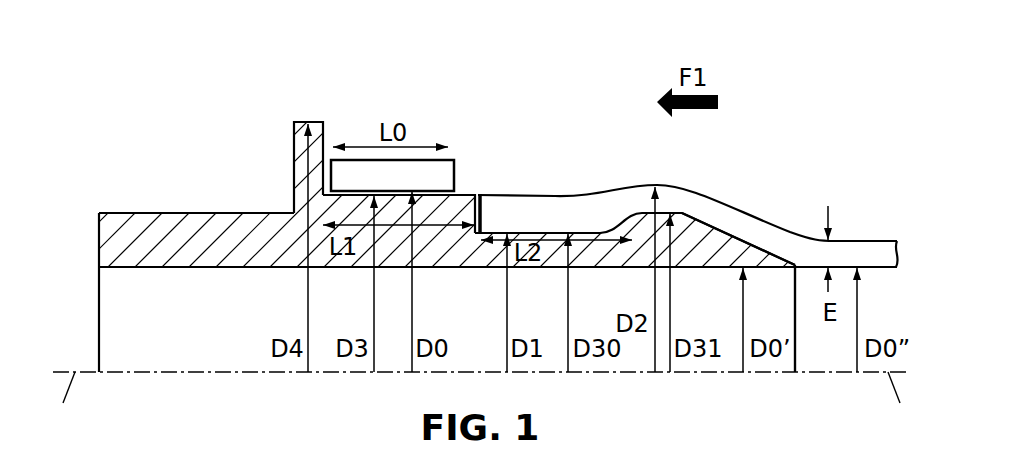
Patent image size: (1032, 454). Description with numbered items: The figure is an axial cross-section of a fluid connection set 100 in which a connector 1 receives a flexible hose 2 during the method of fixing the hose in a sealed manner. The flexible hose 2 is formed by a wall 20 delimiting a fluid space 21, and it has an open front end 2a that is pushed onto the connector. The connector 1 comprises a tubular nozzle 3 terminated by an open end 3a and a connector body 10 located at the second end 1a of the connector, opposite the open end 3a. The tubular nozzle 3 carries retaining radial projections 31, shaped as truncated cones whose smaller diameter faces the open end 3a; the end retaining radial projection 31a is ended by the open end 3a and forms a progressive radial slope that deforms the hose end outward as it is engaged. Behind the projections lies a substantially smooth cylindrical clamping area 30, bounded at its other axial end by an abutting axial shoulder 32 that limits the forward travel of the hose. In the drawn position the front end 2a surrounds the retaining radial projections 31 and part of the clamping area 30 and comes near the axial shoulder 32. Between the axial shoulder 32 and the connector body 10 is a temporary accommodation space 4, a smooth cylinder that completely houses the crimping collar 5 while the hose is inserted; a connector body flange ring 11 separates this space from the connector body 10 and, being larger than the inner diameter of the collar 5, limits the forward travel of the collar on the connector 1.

The fluid connection set 100 is at (598, 92).
The connector 1 is at (270, 158).
The second end of the connector 1a is at (88, 283).
The connector body 10 is at (143, 231).
The connector body flange ring 11 is at (300, 120).
The temporary accommodation space 4 is at (467, 195).
The crimping collar 5 is at (448, 160).
The abutting axial shoulder 32 is at (483, 196).
The front end of the hose 2a is at (519, 190).
The clamping area 30 is at (584, 193).
The flexible hose 2 is at (761, 132).
The retaining radial projections 31 is at (635, 212).
The end retaining radial projection 31a is at (722, 243).
The tubular nozzle 3 is at (703, 258).
The open end of the tubular nozzle 3a is at (804, 346).
The wall 20 is at (872, 253).
The fluid space 21 is at (813, 288).